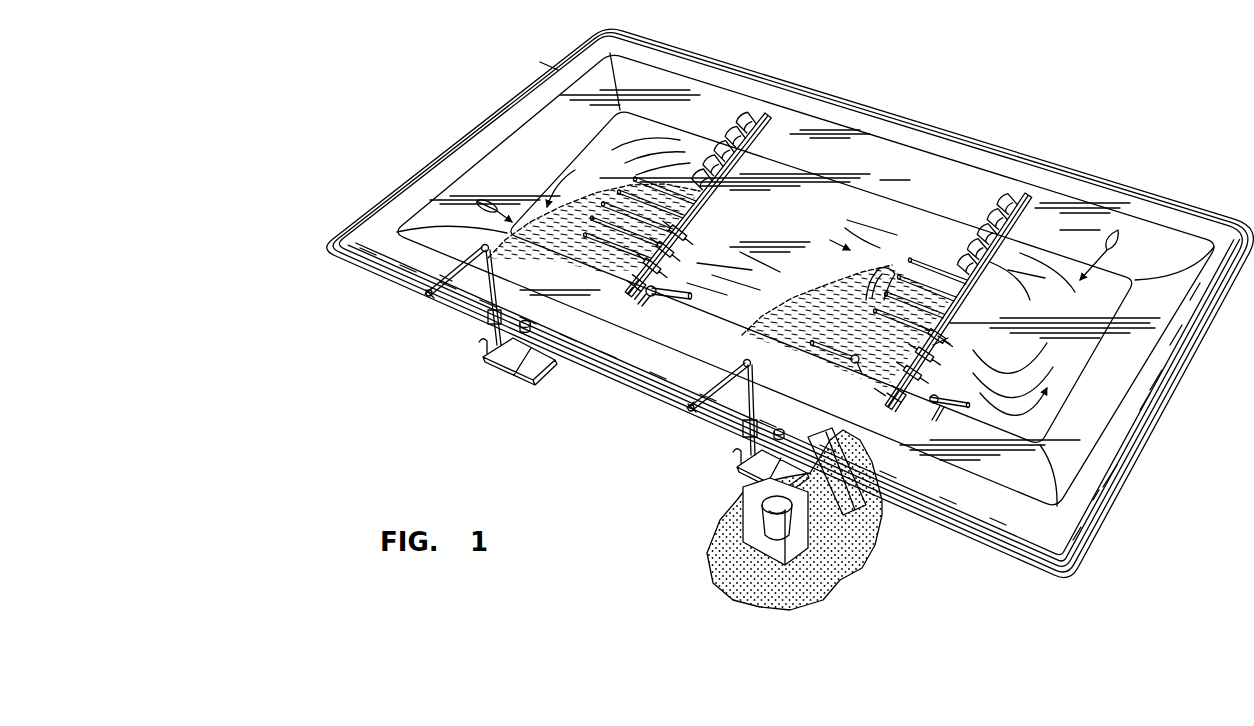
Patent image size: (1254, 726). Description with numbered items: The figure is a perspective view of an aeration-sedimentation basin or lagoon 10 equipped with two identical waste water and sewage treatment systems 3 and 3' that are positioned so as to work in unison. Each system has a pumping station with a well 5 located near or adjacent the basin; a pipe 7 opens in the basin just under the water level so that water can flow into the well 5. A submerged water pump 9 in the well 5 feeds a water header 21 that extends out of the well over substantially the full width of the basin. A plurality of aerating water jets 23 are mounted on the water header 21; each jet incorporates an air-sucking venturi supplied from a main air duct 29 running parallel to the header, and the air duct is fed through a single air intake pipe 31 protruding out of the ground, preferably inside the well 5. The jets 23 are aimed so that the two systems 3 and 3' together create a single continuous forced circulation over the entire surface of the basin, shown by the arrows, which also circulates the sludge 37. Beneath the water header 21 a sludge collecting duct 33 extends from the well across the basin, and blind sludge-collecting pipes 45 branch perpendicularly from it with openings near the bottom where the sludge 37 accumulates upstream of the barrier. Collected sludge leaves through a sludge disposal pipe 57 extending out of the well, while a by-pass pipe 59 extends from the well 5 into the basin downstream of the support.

The pool 10 is at (1112, 486).
The waste water and sewage treatment system 3' is at (645, 173).
The waste water and sewage treatment system 3 is at (957, 300).
The sludge 37 is at (800, 303).
The blind sludge-collecting pipe 45 is at (877, 282).
The sludge collecting duct 33 is at (972, 282).
The water header 21 is at (955, 300).
The water jet 23 is at (945, 339).
The main air duct 29 is at (853, 436).
The pipe 7 is at (838, 356).
The by-pass pipe 59 is at (968, 405).
The sludge disposal pipe 57 is at (742, 378).
The air intake pipe 31 is at (784, 426).
The well 5 is at (810, 546).
The submerged water pump 9 is at (767, 532).